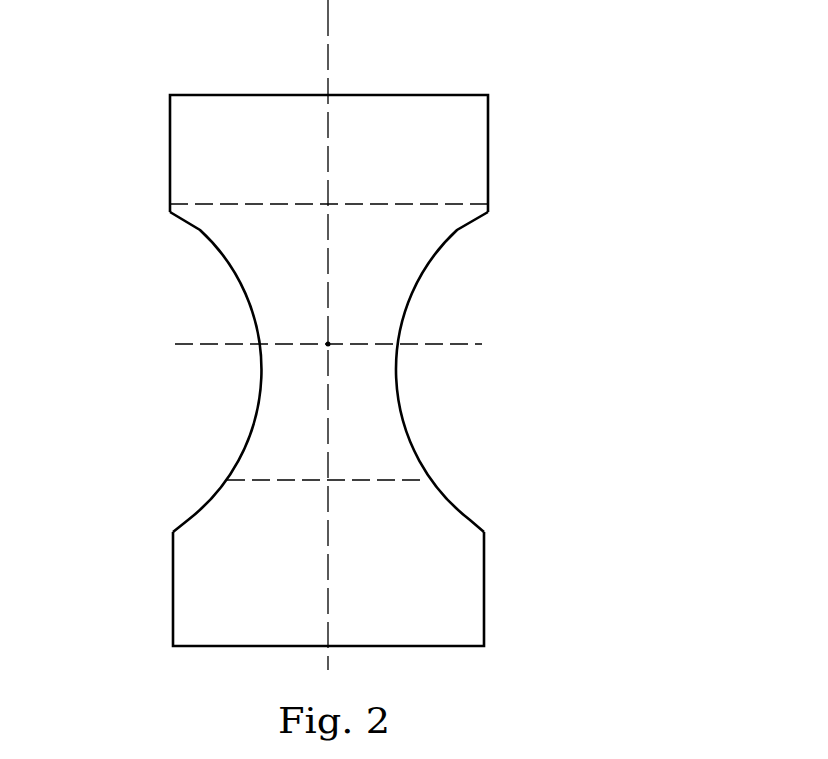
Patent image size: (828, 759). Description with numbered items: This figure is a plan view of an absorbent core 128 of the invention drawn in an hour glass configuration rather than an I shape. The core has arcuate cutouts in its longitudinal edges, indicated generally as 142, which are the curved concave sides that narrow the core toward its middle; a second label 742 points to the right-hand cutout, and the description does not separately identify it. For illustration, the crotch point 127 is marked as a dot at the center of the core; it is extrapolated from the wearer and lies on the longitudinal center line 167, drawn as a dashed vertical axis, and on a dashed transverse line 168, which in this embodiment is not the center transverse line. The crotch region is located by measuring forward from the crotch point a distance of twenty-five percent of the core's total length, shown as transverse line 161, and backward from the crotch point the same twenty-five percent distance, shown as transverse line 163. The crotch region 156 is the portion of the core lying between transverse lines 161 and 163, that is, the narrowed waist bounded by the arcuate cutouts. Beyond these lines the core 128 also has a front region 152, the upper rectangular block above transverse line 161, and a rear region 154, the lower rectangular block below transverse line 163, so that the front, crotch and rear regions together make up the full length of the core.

The absorbent core 128 is at (354, 370).
The front region 152 is at (200, 147).
The rear region 154 is at (200, 583).
The crotch region 156 is at (258, 442).
The arcuate cutouts 142 is at (157, 372).
The concave side surface 742 is at (427, 382).
The longitudinal center line 167 is at (328, 36).
The transverse line 161 is at (385, 205).
The transverse line 168 is at (430, 344).
The transverse line 163 is at (377, 480).
The crotch point 127 is at (328, 344).